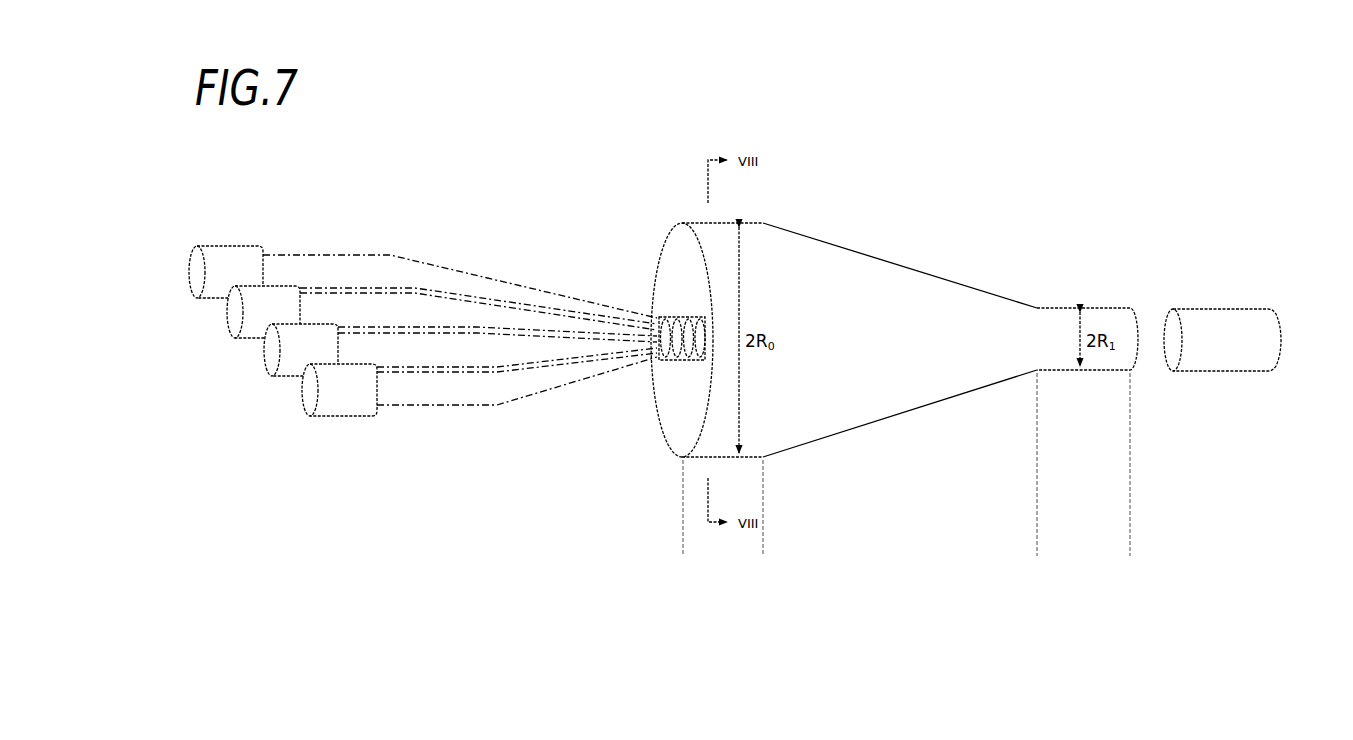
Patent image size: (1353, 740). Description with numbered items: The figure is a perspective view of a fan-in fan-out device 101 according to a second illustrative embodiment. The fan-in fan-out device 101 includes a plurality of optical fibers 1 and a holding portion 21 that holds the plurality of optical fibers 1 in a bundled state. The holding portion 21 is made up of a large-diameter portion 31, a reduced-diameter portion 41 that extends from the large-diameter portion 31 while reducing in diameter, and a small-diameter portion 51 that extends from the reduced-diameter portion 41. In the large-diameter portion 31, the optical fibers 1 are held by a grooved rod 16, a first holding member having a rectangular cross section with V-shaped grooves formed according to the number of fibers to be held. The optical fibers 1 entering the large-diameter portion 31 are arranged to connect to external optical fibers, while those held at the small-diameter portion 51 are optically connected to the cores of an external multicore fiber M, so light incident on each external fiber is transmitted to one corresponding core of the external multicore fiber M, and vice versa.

The optical fiber 1 is at (333, 434).
The grooved rod 16 is at (682, 362).
The fan-in fan-out device 101 is at (894, 408).
The large-diameter portion 31 is at (763, 555).
The reduced-diameter portion 41 is at (1037, 555).
The small-diameter portion 51 is at (1130, 555).
The holding portion 21 is at (1130, 594).
The external multicore fiber M is at (1224, 303).